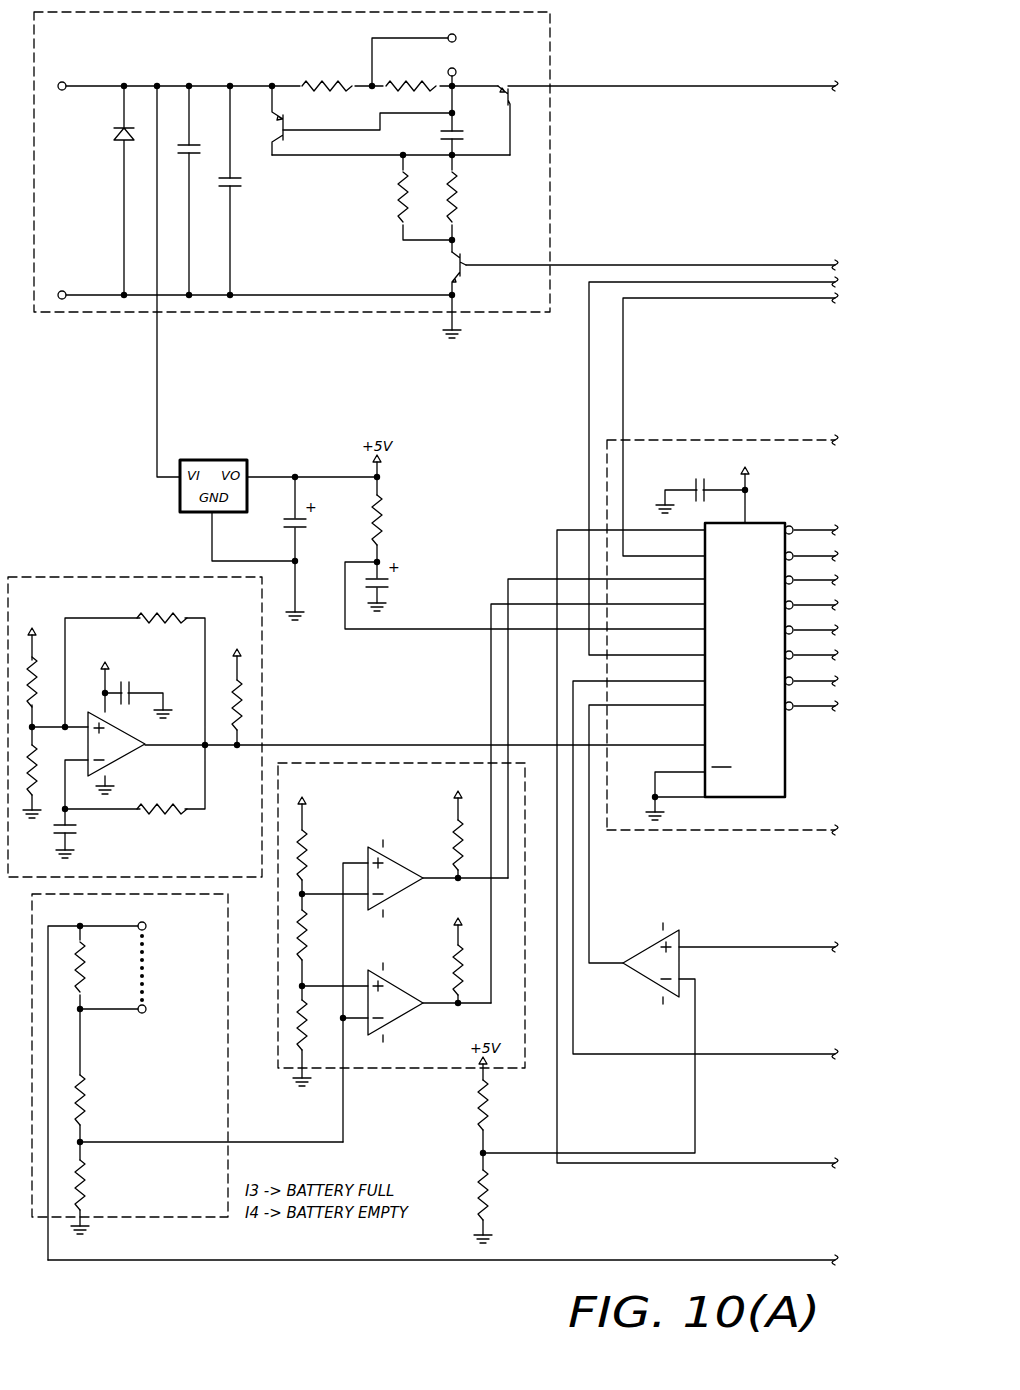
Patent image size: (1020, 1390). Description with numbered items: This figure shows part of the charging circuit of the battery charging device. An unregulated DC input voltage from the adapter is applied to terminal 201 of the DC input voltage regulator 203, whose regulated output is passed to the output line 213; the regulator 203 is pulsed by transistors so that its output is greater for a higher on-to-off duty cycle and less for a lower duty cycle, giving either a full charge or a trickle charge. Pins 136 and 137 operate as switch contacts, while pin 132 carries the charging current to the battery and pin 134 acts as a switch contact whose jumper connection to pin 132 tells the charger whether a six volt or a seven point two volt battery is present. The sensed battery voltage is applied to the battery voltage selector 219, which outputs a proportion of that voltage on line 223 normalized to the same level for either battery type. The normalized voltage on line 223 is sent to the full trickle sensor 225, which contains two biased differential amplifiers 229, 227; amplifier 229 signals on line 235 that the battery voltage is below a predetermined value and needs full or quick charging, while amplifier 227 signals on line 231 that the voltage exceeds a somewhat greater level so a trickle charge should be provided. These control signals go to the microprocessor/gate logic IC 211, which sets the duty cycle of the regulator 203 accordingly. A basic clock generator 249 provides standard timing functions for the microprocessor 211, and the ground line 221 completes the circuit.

The terminal 201 is at (66, 82).
The pin 136 is at (447, 41).
The pin 137 is at (458, 70).
The output line 213 is at (640, 88).
The DC input voltage regulator 203 is at (551, 157).
The microprocessor/gate logic IC 211 is at (805, 440).
The basic clock generator 249 is at (58, 577).
The differential amplifier 229 is at (115, 764).
The line 231 is at (506, 695).
The line 235 is at (491, 713).
The differential amplifier 227 is at (395, 853).
The full trickle sensor 225 is at (400, 1069).
The pin 132 is at (146, 929).
The pin 134 is at (146, 1006).
The battery voltage selector 219 is at (228, 1097).
The line 223 is at (195, 1140).
The ground line 221 is at (188, 1259).